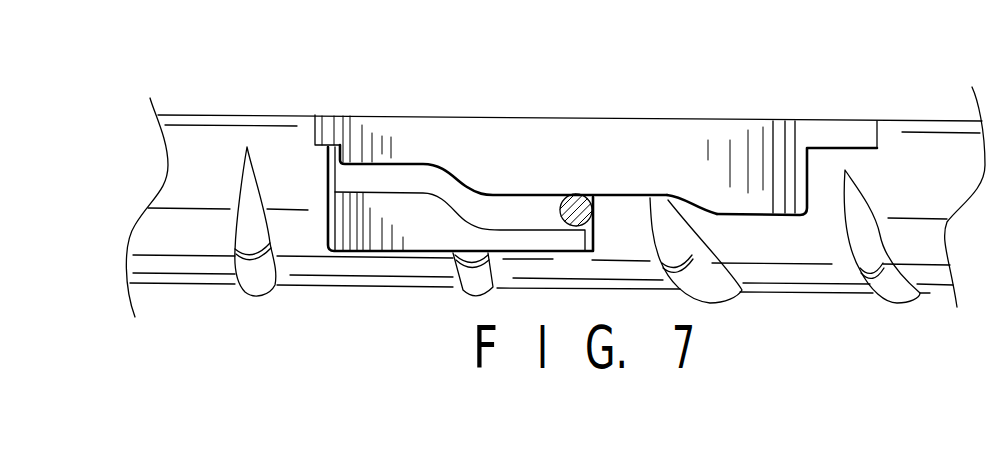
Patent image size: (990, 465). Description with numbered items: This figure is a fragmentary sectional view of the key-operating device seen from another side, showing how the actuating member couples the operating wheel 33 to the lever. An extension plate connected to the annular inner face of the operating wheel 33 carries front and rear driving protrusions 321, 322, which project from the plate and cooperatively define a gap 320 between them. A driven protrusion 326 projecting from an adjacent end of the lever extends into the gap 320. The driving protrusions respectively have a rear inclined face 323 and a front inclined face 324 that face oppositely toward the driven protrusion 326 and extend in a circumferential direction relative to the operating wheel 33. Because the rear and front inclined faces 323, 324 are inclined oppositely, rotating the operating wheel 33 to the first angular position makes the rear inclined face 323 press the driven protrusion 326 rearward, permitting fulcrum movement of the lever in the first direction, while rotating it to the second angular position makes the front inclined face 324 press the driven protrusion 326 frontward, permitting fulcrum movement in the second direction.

The operating wheel 33 is at (207, 112).
The gap 320 is at (422, 177).
The front driving protrusion 321 is at (757, 157).
The rear driving protrusion 322 is at (375, 240).
The rear inclined face 323 is at (727, 217).
The front inclined face 324 is at (393, 190).
The driven protrusion 326 is at (558, 197).